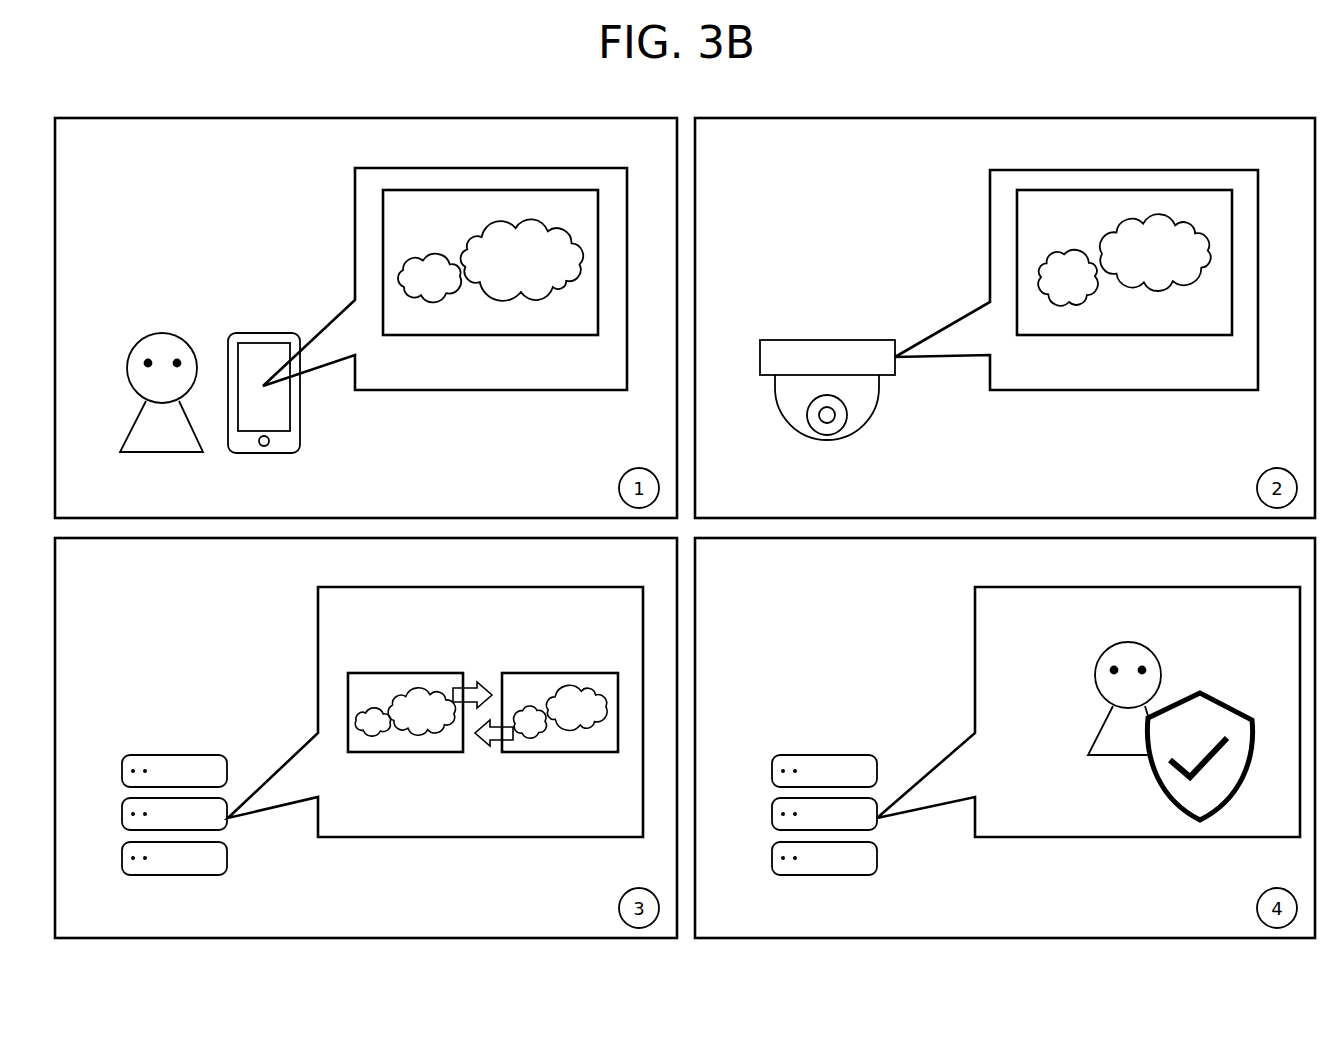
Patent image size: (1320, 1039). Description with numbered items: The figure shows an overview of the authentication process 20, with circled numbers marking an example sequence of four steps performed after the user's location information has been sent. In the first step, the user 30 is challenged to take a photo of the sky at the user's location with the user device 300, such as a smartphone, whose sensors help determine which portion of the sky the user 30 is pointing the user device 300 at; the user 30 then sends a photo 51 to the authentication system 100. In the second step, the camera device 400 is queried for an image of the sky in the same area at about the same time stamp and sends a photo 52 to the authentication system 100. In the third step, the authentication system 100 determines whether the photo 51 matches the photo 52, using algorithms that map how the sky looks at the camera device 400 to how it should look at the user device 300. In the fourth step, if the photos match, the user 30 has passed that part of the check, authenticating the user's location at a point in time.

The authentication process 20 is at (98, 102).
The user 30 is at (144, 400).
The photo 51 is at (496, 337).
The photo 52 is at (1131, 337).
The authentication system 100 is at (175, 754).
The user device 300 is at (268, 332).
The camera device 400 is at (828, 339).